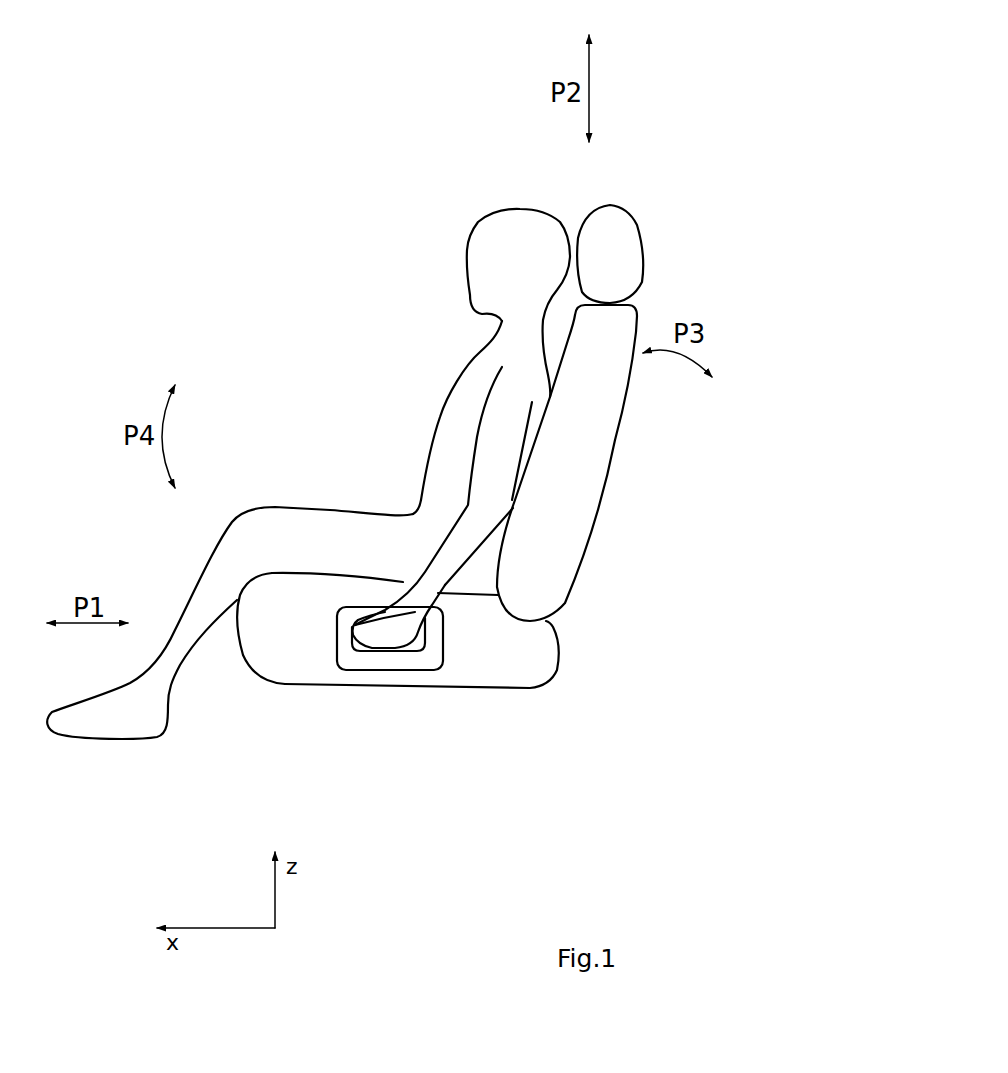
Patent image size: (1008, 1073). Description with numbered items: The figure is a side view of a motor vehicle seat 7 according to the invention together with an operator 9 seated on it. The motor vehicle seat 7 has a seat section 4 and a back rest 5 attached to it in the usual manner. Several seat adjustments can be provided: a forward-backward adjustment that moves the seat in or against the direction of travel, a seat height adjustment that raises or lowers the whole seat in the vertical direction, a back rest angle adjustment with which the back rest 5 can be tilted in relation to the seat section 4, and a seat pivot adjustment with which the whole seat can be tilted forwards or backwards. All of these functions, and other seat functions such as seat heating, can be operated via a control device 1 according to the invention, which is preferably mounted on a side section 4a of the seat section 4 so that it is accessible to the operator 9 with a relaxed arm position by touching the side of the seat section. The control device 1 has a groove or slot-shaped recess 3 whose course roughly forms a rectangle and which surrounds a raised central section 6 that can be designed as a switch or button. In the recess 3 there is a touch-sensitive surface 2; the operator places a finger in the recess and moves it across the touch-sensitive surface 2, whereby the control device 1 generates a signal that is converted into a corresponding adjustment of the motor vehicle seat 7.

The control device 1 is at (460, 416).
The touch-sensitive surface 2 is at (348, 655).
The recess 3 is at (392, 672).
The seat section 4 is at (422, 693).
The side section 4a is at (268, 657).
The back rest 5 is at (577, 538).
The central section 6 is at (418, 636).
The motor vehicle seat 7 is at (680, 130).
The operator 9 is at (385, 398).